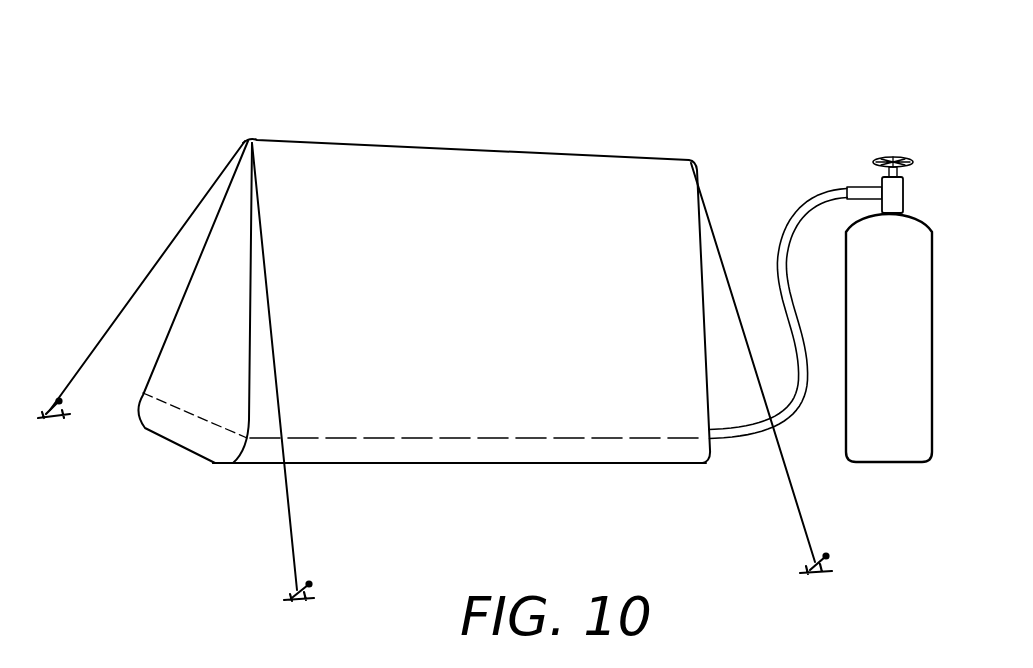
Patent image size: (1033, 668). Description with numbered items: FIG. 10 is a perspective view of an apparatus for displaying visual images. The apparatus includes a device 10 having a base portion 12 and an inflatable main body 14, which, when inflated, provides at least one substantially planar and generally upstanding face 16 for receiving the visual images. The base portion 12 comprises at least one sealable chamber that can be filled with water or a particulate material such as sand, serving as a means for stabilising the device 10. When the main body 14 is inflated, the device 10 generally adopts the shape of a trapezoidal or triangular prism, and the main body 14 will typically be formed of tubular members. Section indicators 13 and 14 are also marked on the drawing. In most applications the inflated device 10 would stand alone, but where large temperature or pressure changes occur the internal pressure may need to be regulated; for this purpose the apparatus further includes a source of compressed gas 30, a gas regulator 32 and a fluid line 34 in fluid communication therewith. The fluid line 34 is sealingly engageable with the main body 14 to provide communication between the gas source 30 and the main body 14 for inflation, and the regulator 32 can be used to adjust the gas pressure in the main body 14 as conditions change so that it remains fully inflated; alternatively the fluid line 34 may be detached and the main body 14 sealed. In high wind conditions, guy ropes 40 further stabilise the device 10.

The device 10 is at (255, 110).
The base portion 12 is at (185, 430).
The section line 13- 13 is at (448, 67).
The inflatable main body 14 is at (501, 152).
The face 16 is at (520, 240).
The source of compressed gas 30 is at (875, 463).
The gas regulator 32 is at (890, 157).
The fluid line 34 is at (777, 248).
The guy ropes 40 is at (287, 521).